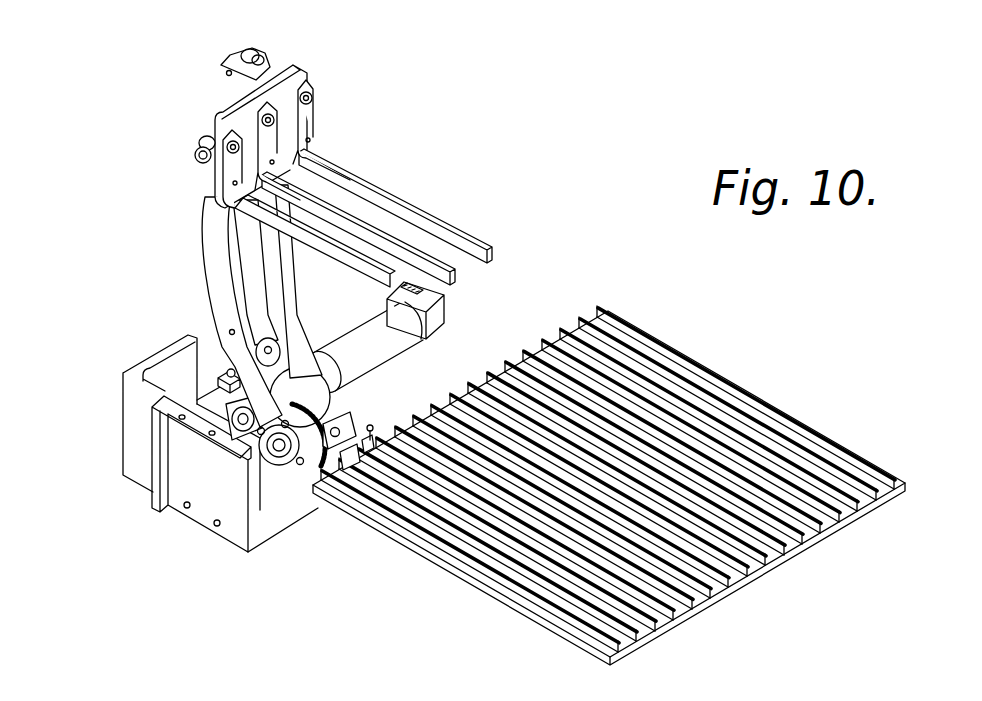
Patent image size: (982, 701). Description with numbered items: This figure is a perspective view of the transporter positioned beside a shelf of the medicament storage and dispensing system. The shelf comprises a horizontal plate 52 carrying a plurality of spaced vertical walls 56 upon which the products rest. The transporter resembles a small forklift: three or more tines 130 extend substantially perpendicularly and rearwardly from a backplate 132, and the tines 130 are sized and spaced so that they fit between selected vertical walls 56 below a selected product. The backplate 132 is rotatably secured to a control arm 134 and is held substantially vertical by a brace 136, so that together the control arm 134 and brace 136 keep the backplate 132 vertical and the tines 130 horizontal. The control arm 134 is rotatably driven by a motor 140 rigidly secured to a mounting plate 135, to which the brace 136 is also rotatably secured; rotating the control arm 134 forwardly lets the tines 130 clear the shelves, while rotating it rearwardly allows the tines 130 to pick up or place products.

The horizontal plate 52 is at (558, 620).
The vertical walls 56 is at (633, 352).
The tines 130 is at (423, 184).
The backplate 132 is at (228, 107).
The control arm 134 is at (212, 262).
The mounting plate 135 is at (116, 511).
The brace 136 is at (297, 298).
The motor 140 is at (464, 316).